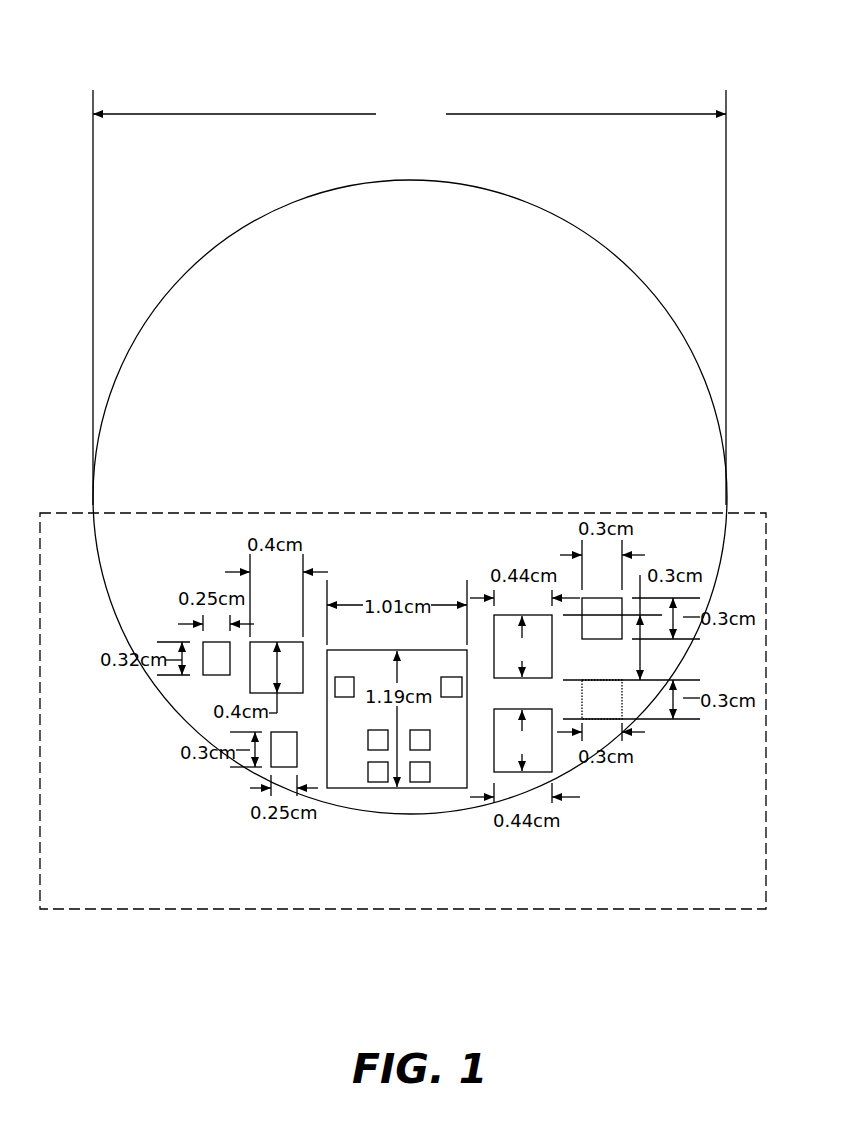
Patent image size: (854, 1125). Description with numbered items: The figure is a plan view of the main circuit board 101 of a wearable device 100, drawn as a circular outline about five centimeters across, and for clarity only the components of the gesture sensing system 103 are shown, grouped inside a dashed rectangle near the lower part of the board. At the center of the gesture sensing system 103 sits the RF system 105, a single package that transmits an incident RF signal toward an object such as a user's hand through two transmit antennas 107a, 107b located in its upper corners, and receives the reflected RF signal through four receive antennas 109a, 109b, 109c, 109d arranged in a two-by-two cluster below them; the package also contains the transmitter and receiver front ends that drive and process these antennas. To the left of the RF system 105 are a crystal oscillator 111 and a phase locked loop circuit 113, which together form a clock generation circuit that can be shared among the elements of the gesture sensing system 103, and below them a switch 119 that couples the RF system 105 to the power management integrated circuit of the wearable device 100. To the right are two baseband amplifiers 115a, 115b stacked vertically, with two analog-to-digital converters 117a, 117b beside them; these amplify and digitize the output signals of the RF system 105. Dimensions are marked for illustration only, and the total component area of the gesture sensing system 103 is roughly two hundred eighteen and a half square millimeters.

The wearable device 100 is at (678, 66).
The main circuit board 101 is at (590, 240).
The gesture sensing system 103 is at (767, 618).
The RF system 105 is at (343, 760).
The transmit antenna 107a is at (348, 685).
The transmit antenna 107b is at (452, 685).
The receive antenna 109a is at (380, 738).
The receive antenna 109b is at (377, 770).
The receive antenna 109c is at (427, 738).
The receive antenna 109d is at (423, 770).
The crystal oscillator 111 is at (215, 653).
The phase locked loop circuit 113 is at (263, 671).
The baseband amplifier 115a is at (537, 755).
The baseband amplifier 115b is at (540, 673).
The analog-to-digital converter 117a is at (612, 702).
The analog-to-digital converter 117b is at (613, 605).
The switch 119 is at (283, 757).